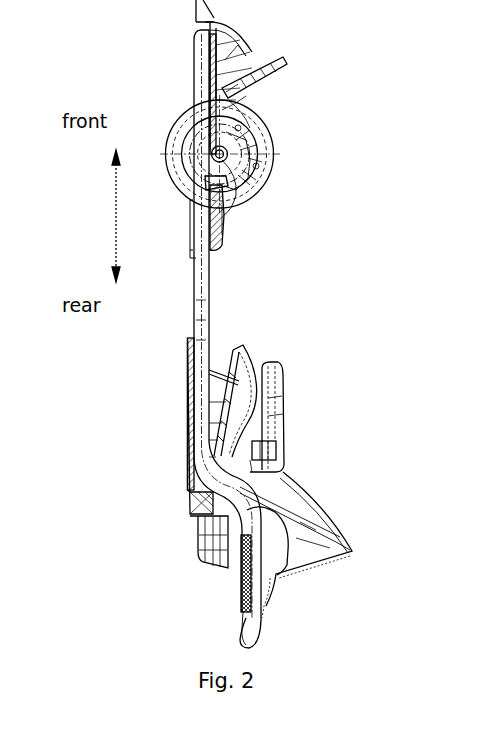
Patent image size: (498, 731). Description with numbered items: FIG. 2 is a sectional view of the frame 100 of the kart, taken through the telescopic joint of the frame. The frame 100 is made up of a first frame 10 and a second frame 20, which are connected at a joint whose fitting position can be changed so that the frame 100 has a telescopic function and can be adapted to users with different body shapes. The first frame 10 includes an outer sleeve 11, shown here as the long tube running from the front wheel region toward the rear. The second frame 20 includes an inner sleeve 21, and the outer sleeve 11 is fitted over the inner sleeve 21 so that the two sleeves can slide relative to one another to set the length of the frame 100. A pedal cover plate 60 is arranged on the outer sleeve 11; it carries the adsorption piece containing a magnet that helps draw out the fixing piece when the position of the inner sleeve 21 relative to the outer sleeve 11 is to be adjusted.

The first frame 10 is at (278, 125).
The outer sleeve 11 is at (191, 110).
The second frame 20 is at (230, 345).
The inner sleeve 21 is at (189, 342).
The pedal cover plate 60 is at (231, 198).
The frame 100 is at (231, 243).